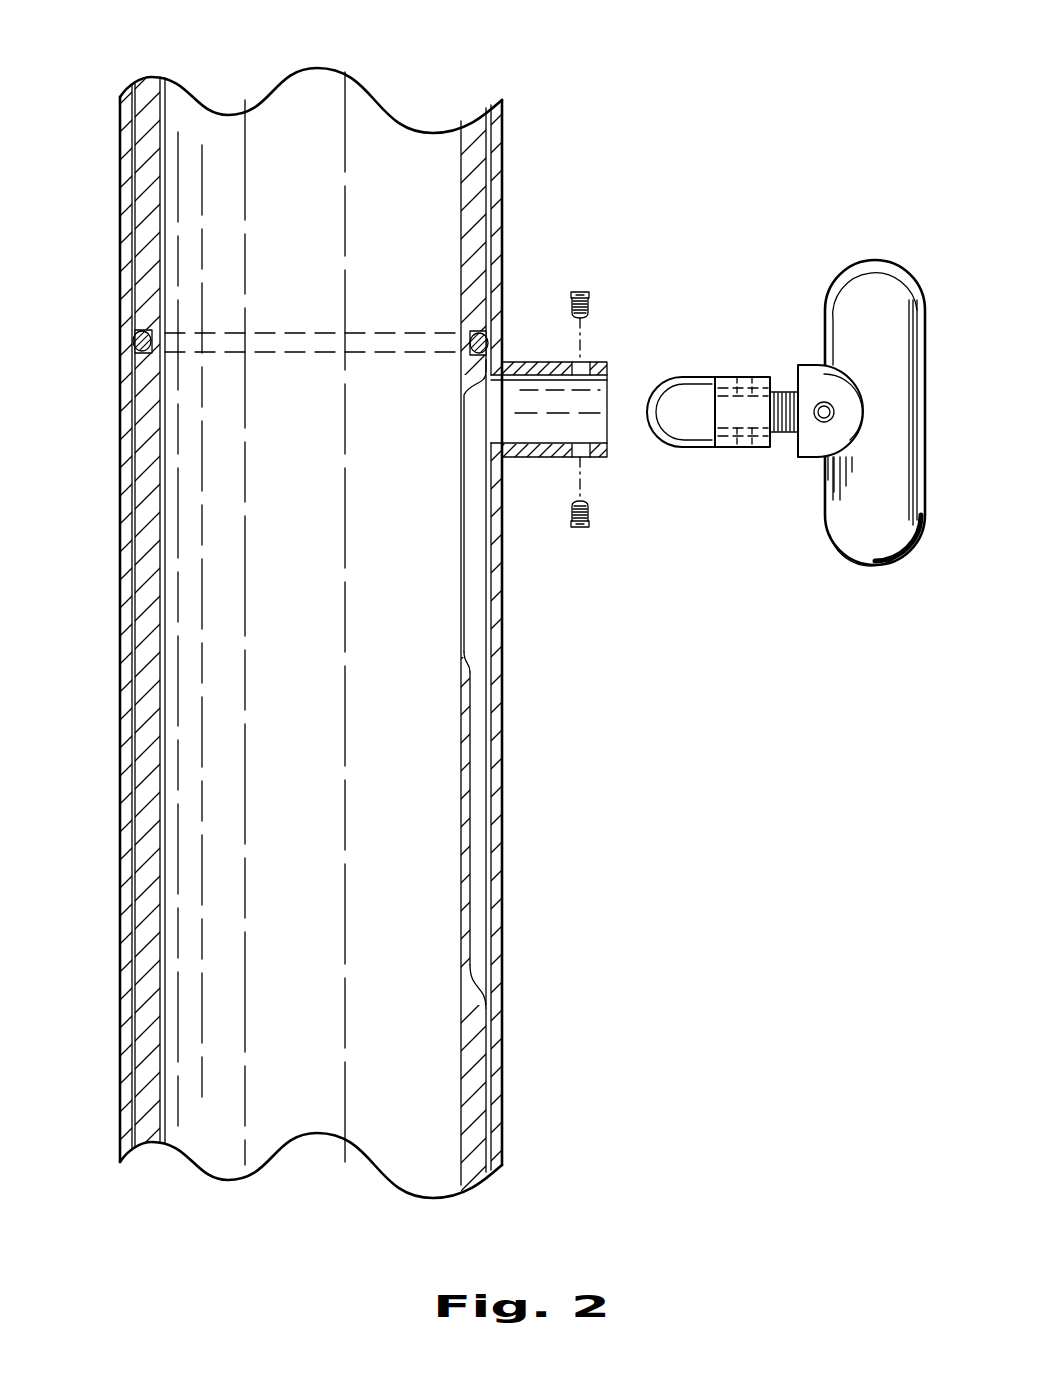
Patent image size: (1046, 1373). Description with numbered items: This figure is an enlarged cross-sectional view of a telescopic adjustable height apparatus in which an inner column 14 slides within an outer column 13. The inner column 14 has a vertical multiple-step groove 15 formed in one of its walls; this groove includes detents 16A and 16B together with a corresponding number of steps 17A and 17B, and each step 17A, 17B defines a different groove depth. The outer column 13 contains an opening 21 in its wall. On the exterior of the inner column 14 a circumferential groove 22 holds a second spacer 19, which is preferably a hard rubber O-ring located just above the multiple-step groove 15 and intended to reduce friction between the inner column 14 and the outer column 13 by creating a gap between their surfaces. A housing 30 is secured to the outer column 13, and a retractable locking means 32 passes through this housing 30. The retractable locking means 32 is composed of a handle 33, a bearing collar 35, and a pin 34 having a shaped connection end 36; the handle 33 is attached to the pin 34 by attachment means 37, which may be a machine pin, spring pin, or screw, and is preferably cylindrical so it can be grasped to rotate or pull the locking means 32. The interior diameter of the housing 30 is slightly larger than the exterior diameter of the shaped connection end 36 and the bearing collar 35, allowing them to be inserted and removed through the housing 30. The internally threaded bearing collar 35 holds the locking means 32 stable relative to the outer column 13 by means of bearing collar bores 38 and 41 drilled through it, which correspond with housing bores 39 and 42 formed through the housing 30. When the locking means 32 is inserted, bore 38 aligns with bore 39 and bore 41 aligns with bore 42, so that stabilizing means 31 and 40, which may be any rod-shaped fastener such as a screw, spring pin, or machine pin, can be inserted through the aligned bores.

The outer column 13 is at (492, 1055).
The inner column 14 is at (150, 136).
The vertical multiple-step groove 15 is at (477, 522).
The detent 16A is at (460, 655).
The detent 16B is at (470, 968).
The step 17A is at (462, 570).
The step 17B is at (475, 800).
The second spacer 19 is at (133, 341).
The opening 21 is at (498, 403).
The groove 22 is at (135, 353).
The housing 30 is at (607, 370).
The stabilizing means 31 is at (585, 292).
The retractable locking means 32 is at (877, 256).
The handle 33 is at (860, 547).
The pin 34 is at (785, 392).
The bearing collar 35 is at (722, 447).
The shaped connection end 36 is at (680, 395).
The attachment means 37 is at (823, 420).
The bearing collar bore 38 is at (740, 378).
The housing bore 39 is at (575, 363).
The stabilizing means 40 is at (590, 521).
The bearing collar bore 41 is at (740, 447).
The housing bore 42 is at (580, 457).